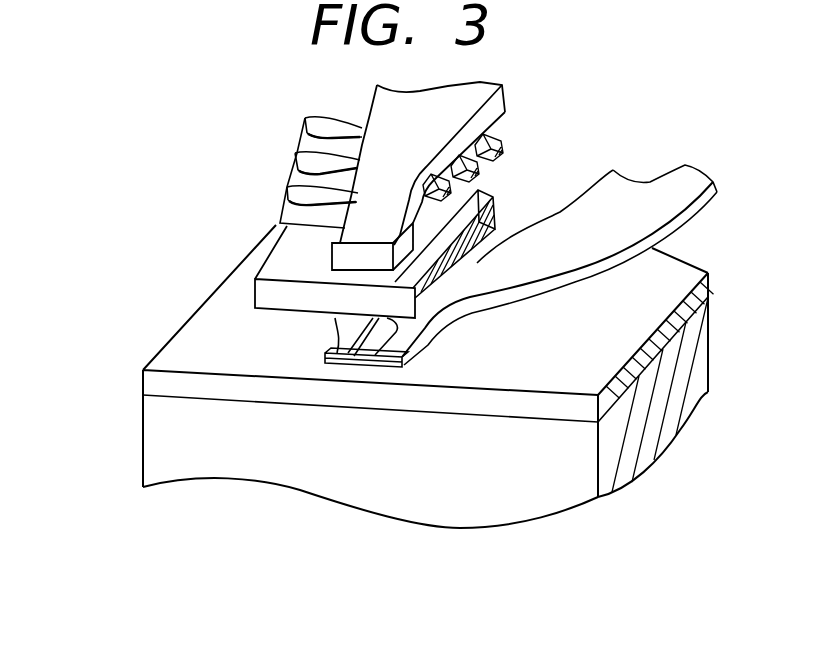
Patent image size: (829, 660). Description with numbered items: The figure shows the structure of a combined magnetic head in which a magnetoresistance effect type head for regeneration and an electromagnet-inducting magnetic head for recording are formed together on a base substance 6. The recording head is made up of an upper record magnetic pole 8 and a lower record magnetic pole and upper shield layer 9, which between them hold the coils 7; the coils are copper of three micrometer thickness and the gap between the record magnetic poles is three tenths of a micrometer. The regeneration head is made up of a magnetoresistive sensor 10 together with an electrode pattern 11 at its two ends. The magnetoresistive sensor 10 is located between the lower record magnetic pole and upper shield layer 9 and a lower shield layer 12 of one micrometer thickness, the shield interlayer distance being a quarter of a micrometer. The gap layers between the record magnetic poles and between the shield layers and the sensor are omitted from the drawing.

The base substance 6 is at (517, 493).
The coils 7 is at (304, 137).
The upper record magnetic pole 8 is at (342, 257).
The lower record magnetic pole and upper shield layer 9 is at (253, 295).
The magnetoresistive sensor 10 is at (355, 367).
The electrode pattern 11 is at (458, 293).
The lower shield layer 12 is at (150, 383).